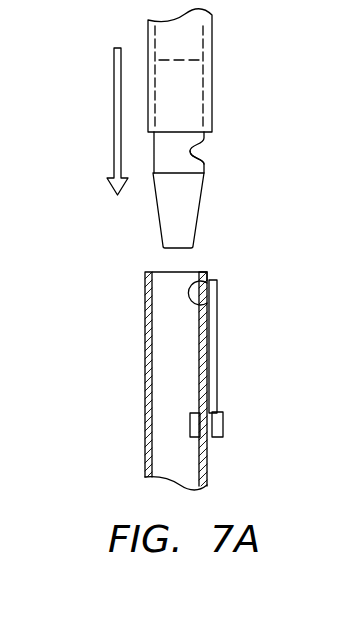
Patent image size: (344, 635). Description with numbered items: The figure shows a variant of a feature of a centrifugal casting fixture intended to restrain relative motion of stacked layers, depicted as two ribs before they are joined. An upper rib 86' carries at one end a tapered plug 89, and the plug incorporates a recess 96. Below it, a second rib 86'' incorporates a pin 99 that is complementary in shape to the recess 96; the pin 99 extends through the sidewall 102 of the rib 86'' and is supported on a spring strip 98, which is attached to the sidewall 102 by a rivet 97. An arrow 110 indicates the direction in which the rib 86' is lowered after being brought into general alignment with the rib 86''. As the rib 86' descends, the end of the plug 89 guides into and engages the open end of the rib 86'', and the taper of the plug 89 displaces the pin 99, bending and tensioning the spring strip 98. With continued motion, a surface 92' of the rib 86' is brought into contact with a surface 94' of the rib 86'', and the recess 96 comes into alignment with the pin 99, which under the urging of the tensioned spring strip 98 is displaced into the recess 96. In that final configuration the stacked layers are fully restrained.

The rib 86' is at (226, 70).
The rib 86'' is at (136, 381).
The tapered plug 89 is at (155, 213).
The surface 92' is at (236, 141).
The recess 96 is at (193, 153).
The surface 94' is at (257, 277).
The pin 99 is at (200, 292).
The spring strip 98 is at (218, 372).
The rivet 97 is at (224, 425).
The sidewall 102 is at (192, 411).
The arrow 110 is at (113, 118).